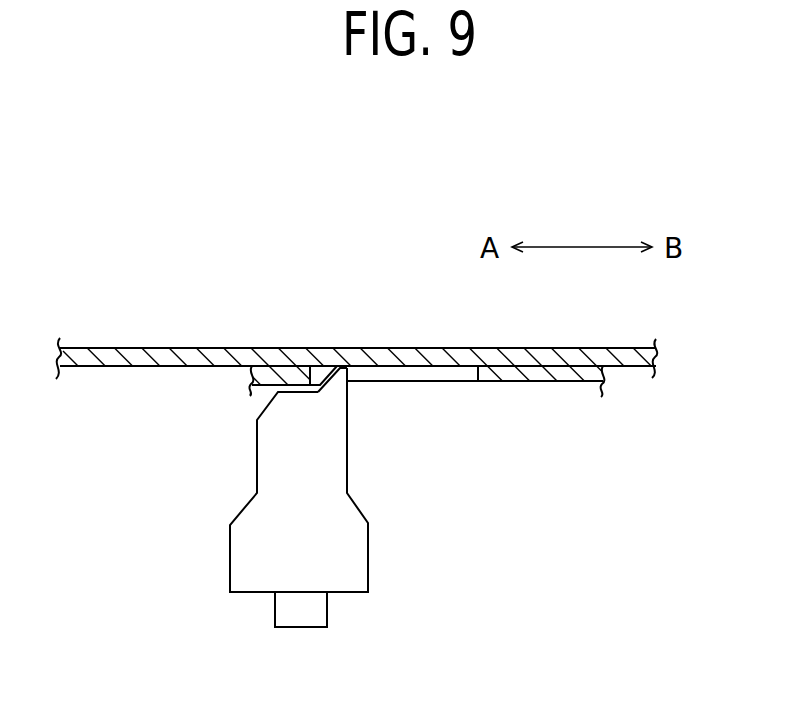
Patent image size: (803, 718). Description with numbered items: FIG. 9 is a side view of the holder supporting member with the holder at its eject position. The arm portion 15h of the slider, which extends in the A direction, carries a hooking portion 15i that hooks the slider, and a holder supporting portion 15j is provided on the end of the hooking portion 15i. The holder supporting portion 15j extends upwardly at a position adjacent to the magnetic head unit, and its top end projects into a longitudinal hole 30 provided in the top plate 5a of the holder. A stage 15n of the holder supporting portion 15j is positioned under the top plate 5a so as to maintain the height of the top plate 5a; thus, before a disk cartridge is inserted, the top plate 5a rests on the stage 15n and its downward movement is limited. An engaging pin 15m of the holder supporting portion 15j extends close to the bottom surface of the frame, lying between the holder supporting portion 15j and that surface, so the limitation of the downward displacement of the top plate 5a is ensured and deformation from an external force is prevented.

The arm portion 15h is at (522, 358).
The stage 15n is at (314, 374).
The holder supporting portion 15j is at (335, 393).
The hooking portion 15i is at (368, 572).
The engaging pin 15m is at (315, 612).
The longitudinal hole 30 is at (436, 374).
The top plate 5a is at (560, 374).